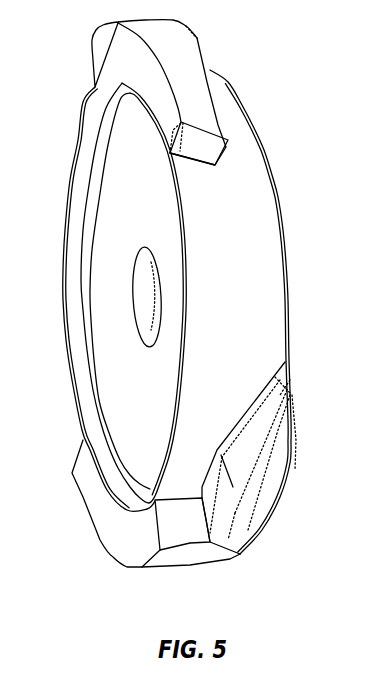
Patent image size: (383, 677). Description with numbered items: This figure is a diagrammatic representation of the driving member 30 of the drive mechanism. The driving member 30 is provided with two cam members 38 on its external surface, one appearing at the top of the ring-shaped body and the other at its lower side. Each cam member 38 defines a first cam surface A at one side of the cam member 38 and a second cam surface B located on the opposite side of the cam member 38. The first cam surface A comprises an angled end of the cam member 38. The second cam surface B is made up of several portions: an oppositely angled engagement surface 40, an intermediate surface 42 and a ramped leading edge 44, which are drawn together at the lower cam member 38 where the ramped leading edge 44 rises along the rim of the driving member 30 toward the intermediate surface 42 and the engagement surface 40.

The driving member 30 is at (261, 223).
The cam member 38 is at (198, 95).
The engagement surface 40 is at (178, 536).
The intermediate surface 42 is at (220, 502).
The ramped leading edge 44 is at (273, 403).
The first cam surface A is at (199, 149).
The second cam surface B is at (249, 442).